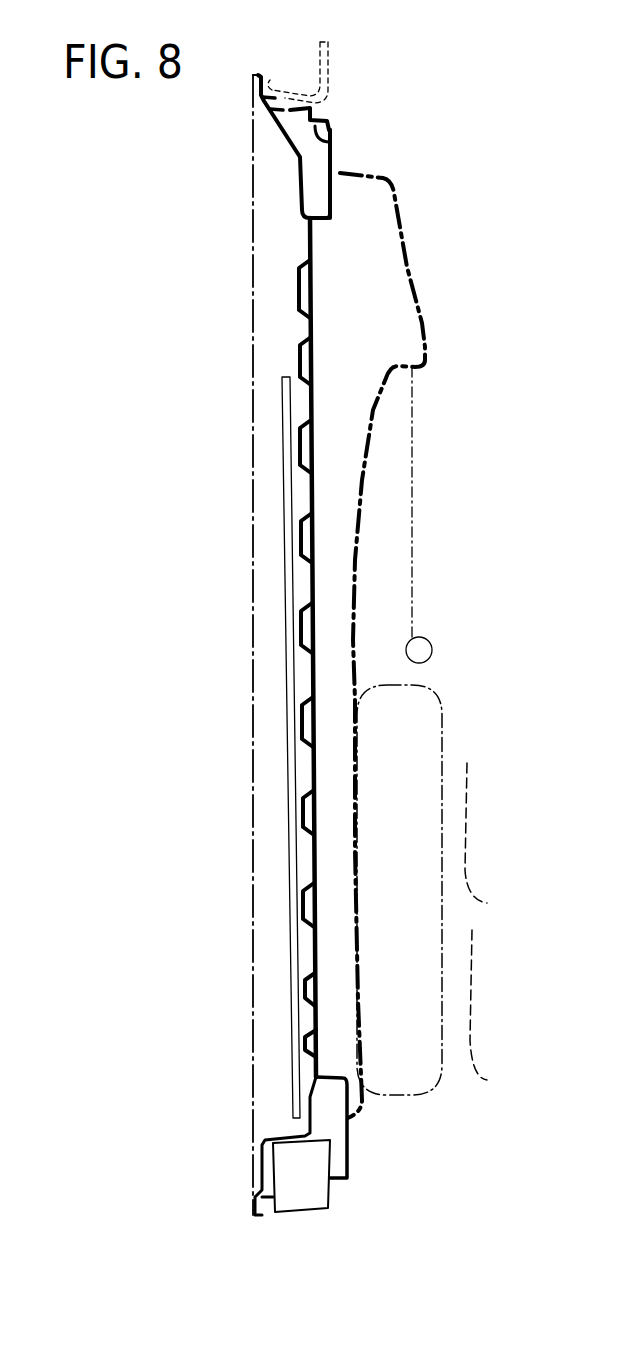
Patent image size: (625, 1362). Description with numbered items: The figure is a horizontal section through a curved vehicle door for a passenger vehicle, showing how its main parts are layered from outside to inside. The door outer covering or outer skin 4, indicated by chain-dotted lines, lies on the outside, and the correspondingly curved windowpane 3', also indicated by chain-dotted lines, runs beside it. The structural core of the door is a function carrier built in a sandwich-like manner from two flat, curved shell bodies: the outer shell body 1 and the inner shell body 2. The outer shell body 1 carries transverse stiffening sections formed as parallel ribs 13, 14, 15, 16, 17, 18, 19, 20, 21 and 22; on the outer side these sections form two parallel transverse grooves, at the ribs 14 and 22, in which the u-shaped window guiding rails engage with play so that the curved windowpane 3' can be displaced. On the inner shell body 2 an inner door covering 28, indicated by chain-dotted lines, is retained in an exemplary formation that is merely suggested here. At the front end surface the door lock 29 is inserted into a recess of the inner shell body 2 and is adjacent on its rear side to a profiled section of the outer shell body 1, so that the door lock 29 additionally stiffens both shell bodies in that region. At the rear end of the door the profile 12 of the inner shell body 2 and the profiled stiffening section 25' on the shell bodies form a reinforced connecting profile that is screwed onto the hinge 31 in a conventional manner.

The outer shell body 1 is at (290, 294).
The inner shell body 2 is at (330, 293).
The windowpane 3' is at (253, 747).
The outer skin 4 is at (253, 190).
The profile 12 is at (331, 143).
The rib 13 is at (307, 247).
The rib 14 is at (308, 330).
The rib 15 is at (305, 400).
The rib 16 is at (305, 490).
The rib 17 is at (308, 590).
The rib 18 is at (308, 678).
The rib 19 is at (310, 772).
The rib 20 is at (310, 870).
The rib 21 is at (312, 960).
The rib 22 is at (312, 1028).
The profiled stiffening section 25' is at (342, 107).
The inner door covering 28 is at (402, 238).
The door lock 29 is at (317, 1197).
The hinge 31 is at (327, 55).